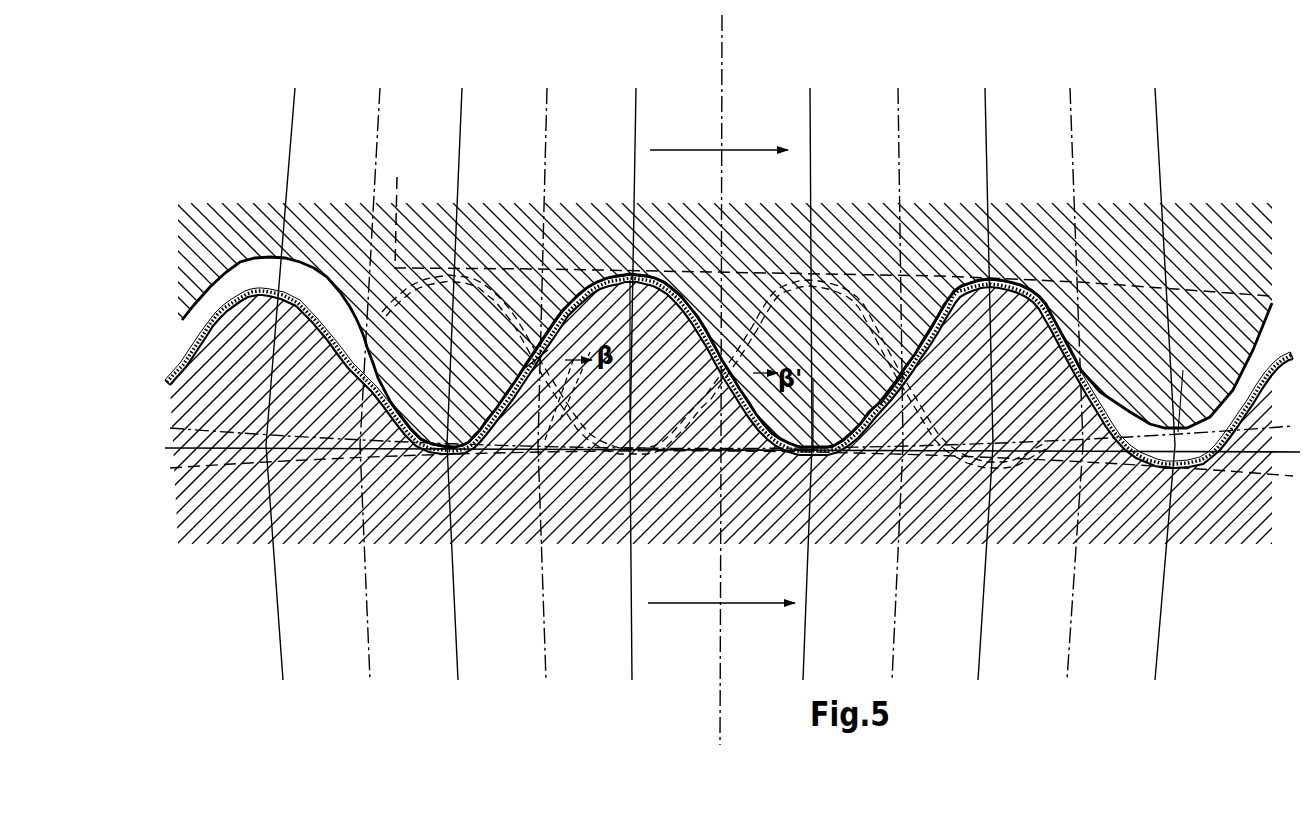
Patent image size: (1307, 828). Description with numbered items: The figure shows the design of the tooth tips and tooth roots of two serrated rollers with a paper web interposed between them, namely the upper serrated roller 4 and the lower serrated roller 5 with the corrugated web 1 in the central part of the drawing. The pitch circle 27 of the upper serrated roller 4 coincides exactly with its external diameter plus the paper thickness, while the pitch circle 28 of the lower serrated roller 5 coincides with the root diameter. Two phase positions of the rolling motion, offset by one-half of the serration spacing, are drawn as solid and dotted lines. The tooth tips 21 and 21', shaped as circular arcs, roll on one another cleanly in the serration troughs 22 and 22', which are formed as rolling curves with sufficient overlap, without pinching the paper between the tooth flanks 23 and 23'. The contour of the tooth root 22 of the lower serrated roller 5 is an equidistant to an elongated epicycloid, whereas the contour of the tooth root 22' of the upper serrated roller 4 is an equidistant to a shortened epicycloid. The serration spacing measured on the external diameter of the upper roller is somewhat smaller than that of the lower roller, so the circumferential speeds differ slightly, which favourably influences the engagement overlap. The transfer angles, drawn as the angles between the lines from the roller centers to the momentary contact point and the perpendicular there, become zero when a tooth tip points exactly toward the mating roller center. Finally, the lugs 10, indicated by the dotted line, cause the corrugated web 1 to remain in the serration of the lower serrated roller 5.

The corrugated web 1 is at (320, 318).
The upper serrated roller 4 is at (733, 244).
The lower serrated roller 5 is at (733, 532).
The lugs 10 is at (511, 264).
The tooth tip 21 is at (648, 248).
The tooth tip 21' is at (624, 471).
The serration trough 22 is at (627, 366).
The serration trough 22' is at (714, 371).
The tooth flank 23 is at (770, 372).
The tooth flank 23' is at (730, 378).
The pitch circle 27 is at (195, 428).
The pitch circle 28 is at (200, 470).